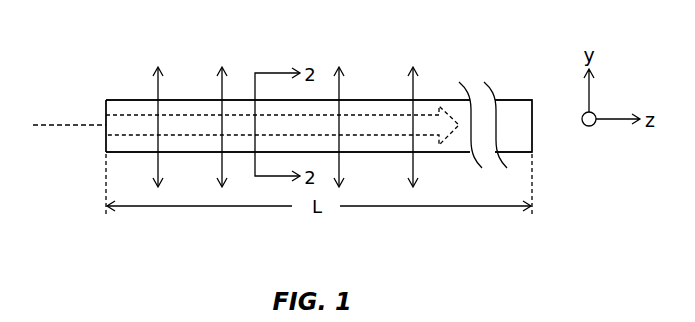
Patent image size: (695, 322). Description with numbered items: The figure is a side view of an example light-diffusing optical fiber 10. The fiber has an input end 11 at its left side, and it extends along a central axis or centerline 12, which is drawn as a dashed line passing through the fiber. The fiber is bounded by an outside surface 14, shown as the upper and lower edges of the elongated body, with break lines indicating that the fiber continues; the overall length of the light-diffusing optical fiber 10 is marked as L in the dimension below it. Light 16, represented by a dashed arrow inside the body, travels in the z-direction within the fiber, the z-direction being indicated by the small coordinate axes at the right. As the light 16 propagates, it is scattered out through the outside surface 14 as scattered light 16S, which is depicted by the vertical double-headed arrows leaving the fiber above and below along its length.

The light-diffusing optical fiber 10 is at (100, 45).
The input end 11 is at (105, 150).
The central axis 12 is at (63, 125).
The outside surface 14 is at (183, 100).
The light 16 is at (125, 121).
The scattered light 16S is at (414, 84).